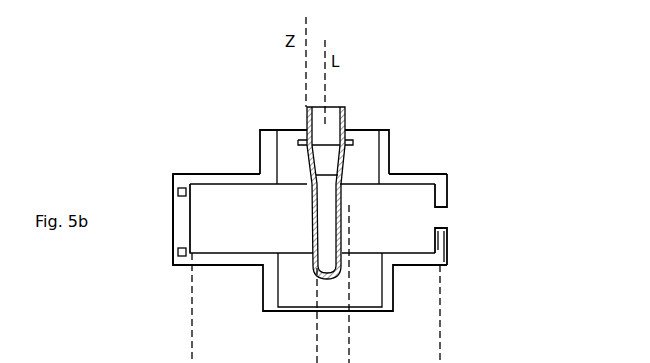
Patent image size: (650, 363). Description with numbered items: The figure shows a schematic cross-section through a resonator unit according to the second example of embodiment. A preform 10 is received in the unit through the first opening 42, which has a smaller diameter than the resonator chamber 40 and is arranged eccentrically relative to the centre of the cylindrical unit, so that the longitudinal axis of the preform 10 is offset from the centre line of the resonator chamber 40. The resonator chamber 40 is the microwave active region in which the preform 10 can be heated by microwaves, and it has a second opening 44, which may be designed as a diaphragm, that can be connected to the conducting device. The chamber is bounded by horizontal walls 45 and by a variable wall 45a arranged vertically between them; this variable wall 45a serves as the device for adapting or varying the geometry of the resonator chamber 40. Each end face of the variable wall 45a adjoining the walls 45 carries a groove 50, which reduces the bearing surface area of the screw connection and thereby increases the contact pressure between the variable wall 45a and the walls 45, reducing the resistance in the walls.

The preform 10 is at (346, 110).
The resonator chamber 40 is at (412, 198).
The first opening 42 is at (367, 129).
The second opening 44 is at (438, 218).
The walls 45 is at (218, 182).
The variable wall 45a is at (183, 205).
The groove 50 is at (188, 174).